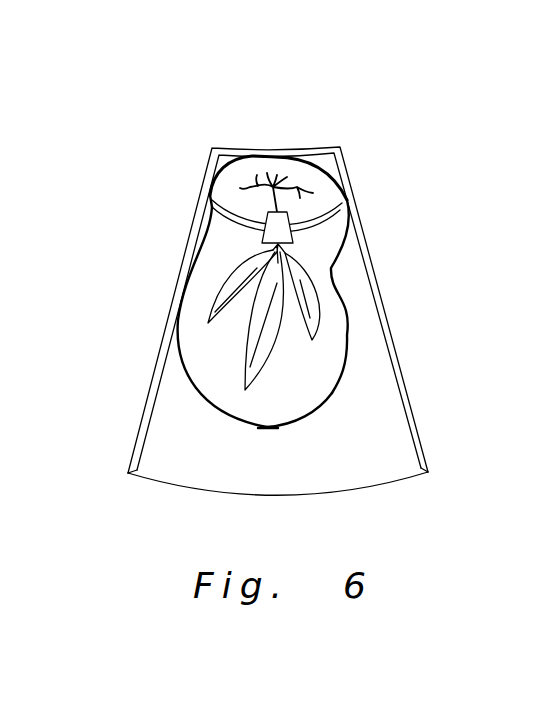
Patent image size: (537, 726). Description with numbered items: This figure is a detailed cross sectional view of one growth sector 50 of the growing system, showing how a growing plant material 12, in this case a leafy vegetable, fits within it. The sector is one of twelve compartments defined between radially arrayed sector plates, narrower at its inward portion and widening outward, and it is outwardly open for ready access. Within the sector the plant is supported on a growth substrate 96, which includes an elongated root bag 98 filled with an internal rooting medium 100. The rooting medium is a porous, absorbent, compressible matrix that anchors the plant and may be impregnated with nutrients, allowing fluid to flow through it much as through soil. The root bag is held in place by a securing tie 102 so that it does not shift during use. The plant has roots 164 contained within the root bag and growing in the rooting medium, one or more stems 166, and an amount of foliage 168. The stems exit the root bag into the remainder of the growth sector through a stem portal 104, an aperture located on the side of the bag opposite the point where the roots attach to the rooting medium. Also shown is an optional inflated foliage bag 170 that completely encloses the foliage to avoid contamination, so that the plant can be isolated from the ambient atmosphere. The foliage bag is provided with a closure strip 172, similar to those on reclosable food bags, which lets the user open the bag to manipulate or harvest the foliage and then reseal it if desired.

The growing plant material 12 is at (325, 429).
The growth sector 50 is at (403, 314).
The growth substrate 96 is at (320, 208).
The root bag 98 is at (219, 175).
The rooting medium 100 is at (318, 182).
The securing tie 102 is at (273, 157).
The stem portal 104 is at (222, 207).
The roots 164 is at (317, 190).
The stem 166 is at (270, 246).
The foliage 168 is at (224, 287).
The foliage bag 170 is at (347, 357).
The closure strip 172 is at (267, 430).